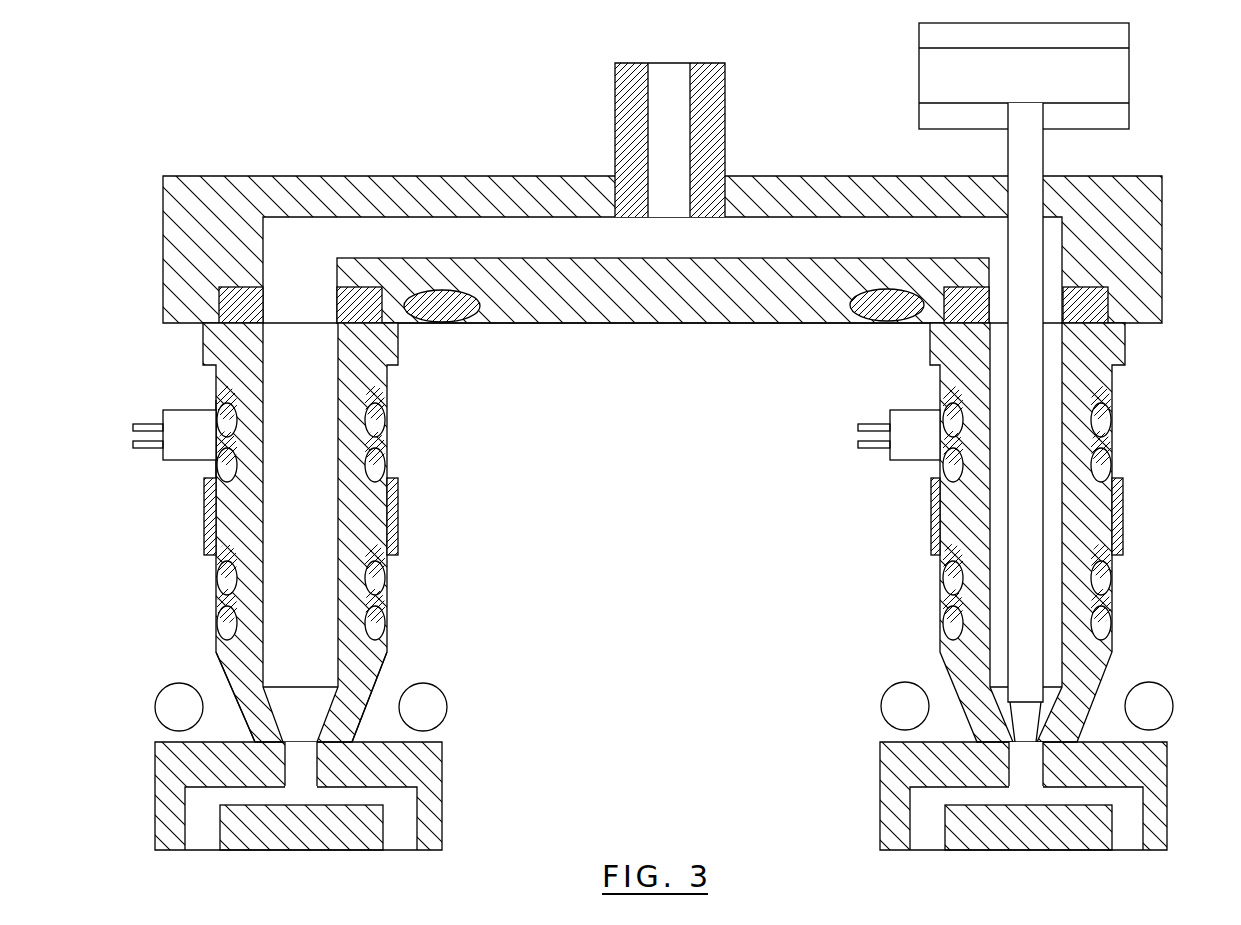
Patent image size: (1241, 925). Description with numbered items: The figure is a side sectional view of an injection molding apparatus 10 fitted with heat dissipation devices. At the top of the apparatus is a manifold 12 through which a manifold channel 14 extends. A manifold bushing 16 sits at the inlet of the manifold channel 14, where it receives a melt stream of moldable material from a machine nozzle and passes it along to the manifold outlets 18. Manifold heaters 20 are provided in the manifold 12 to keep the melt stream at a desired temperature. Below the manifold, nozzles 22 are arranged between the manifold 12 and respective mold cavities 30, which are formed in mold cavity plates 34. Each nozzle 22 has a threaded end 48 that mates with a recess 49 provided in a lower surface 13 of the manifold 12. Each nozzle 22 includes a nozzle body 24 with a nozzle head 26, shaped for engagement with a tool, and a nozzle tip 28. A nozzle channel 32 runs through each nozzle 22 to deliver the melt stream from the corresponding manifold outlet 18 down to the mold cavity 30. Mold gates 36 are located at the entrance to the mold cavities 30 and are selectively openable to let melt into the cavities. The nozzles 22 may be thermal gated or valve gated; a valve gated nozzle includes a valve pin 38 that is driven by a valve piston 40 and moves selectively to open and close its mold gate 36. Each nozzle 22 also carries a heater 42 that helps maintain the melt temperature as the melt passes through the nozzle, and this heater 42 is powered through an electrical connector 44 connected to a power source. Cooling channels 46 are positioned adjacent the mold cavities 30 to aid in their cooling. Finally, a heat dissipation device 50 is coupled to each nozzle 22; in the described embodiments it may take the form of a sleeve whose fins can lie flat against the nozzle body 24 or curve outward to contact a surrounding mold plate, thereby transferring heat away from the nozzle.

The injection molding apparatus 10 is at (242, 84).
The manifold 12 is at (446, 190).
The lower surface 13 is at (443, 326).
The manifold channel 14 is at (551, 251).
The manifold bushing 16 is at (707, 88).
The manifold outlet 18 is at (400, 340).
The manifold heater 20 is at (866, 311).
The nozzle 22 is at (390, 425).
The nozzle body 24 is at (382, 608).
The nozzle head 26 is at (215, 343).
The nozzle tip 28 is at (372, 672).
The mold cavity 30 is at (403, 805).
The nozzle channel 32 is at (313, 507).
The mold cavity plate 34 is at (423, 762).
The mold gate 36 is at (310, 763).
The valve pin 38 is at (1030, 605).
The valve piston 40 is at (1115, 79).
The heater 42 is at (215, 630).
The electrical connector 44 is at (185, 455).
The cooling channel 46 is at (895, 696).
The threaded end 48 is at (1090, 306).
The recess 49 is at (955, 300).
The heat dissipation device 50 is at (398, 500).